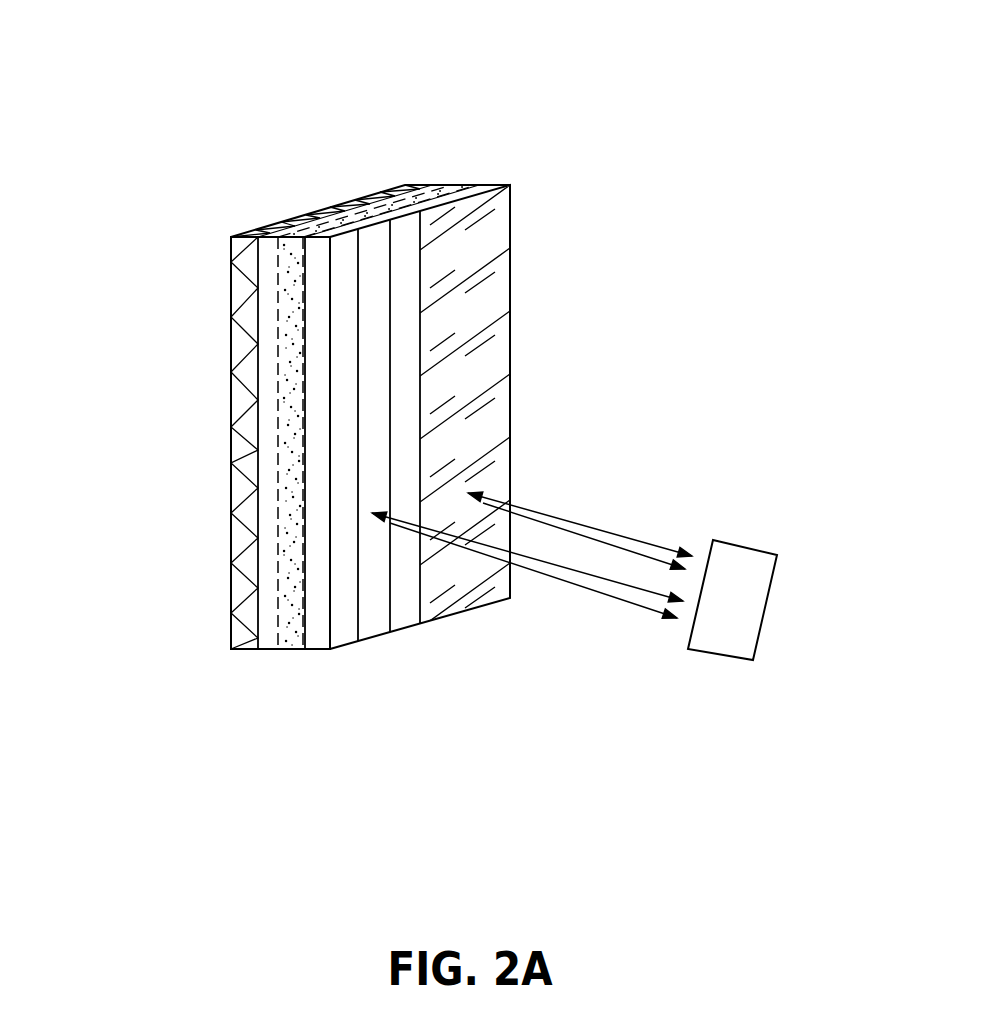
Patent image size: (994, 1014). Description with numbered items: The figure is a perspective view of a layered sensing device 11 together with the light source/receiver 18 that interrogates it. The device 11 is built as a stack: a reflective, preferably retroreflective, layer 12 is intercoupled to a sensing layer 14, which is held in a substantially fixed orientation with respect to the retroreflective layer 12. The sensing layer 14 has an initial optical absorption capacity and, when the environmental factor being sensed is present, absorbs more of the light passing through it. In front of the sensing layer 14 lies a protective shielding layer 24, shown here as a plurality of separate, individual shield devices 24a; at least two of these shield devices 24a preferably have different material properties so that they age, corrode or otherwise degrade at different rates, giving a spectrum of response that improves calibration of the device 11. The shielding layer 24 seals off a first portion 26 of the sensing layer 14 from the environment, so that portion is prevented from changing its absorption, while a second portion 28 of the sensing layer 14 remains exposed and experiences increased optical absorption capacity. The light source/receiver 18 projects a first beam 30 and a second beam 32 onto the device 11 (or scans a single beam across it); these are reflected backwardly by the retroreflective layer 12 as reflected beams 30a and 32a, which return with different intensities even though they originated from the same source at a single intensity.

The sensing device 11 is at (590, 63).
The retroreflective layer 12 is at (212, 337).
The sensing layer 14 is at (253, 396).
The shielding layer 24 is at (348, 628).
The individual shield devices 24a is at (403, 438).
The first portion 26 is at (407, 264).
The second portion 28 is at (497, 414).
The first beam 30 is at (533, 572).
The reflected beam 30a is at (622, 583).
The second beam 32 is at (600, 530).
The reflected beam 32a is at (534, 505).
The light source/receiver 18 is at (740, 558).